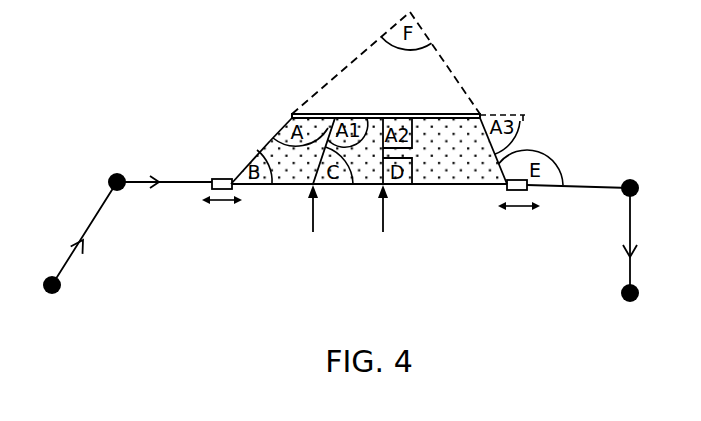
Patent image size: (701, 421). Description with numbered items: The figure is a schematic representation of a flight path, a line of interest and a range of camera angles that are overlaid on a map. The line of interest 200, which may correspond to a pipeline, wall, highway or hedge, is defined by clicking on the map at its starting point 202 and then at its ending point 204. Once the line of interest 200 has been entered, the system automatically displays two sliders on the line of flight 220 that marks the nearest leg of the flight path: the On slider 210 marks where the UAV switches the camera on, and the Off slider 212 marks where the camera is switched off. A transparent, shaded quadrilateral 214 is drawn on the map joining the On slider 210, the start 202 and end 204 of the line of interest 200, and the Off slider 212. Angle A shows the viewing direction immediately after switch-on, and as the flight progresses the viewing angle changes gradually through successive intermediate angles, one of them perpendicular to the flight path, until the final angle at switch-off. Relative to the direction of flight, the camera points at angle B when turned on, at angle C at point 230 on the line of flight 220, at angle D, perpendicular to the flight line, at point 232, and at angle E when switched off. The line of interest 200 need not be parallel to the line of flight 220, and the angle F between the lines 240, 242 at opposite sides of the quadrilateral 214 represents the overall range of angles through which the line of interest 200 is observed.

The line of interest 200 is at (367, 113).
The starting point 202 is at (292, 113).
The ending point 204 is at (480, 114).
The On slider 210 is at (233, 188).
The Off slider 212 is at (528, 190).
The quadrilateral 214 is at (266, 142).
The line of flight 220 is at (592, 182).
The point on the line of flight 230 is at (312, 219).
The point on the line of flight 232 is at (383, 219).
The side line of the quadrilateral 240 is at (269, 140).
The side line of the quadrilateral 242 is at (505, 157).